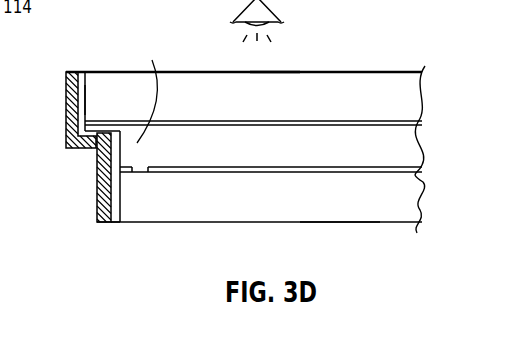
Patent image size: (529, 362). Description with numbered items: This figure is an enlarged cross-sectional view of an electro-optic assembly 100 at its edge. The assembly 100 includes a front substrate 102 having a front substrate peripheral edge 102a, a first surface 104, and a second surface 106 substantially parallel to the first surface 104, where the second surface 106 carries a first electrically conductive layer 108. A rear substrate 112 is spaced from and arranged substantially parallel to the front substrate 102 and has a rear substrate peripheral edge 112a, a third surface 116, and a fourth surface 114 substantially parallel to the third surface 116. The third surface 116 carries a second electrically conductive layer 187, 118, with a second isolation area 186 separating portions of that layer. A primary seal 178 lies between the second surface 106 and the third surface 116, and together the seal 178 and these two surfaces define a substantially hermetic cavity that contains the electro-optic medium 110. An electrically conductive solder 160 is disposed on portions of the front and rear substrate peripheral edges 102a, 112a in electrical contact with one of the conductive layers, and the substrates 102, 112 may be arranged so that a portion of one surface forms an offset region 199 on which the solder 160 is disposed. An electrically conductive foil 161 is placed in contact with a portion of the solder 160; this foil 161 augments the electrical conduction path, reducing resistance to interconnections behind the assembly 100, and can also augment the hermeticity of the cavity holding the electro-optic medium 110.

The electro-optic assembly 100 is at (189, 48).
The front substrate 102 is at (363, 109).
The front substrate peripheral edge 102a is at (108, 97).
The first surface 104 is at (337, 72).
The second surface 106 is at (272, 121).
The first electrically conductive layer 108 is at (417, 105).
The electro-optic medium 110 is at (262, 156).
The rear substrate 112 is at (365, 209).
The rear substrate peripheral edge 112a is at (147, 190).
The fourth surface 114 is at (360, 222).
The third surface 116 is at (308, 173).
The second electrically conductive layer 118 is at (420, 190).
The electrically conductive solder 160 is at (98, 185).
The electrically conductive foil 161 is at (67, 122).
The primary seal 178 is at (141, 89).
The second isolation area 186 is at (132, 193).
The second electrically conductive layer 187 is at (122, 169).
The offset region 199 is at (88, 145).